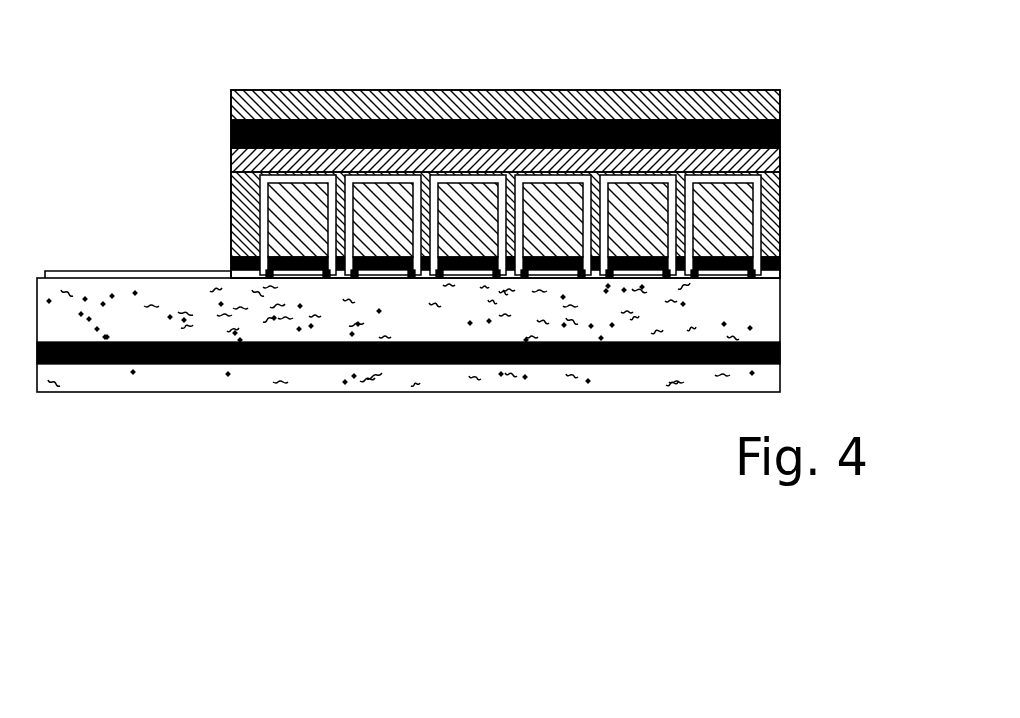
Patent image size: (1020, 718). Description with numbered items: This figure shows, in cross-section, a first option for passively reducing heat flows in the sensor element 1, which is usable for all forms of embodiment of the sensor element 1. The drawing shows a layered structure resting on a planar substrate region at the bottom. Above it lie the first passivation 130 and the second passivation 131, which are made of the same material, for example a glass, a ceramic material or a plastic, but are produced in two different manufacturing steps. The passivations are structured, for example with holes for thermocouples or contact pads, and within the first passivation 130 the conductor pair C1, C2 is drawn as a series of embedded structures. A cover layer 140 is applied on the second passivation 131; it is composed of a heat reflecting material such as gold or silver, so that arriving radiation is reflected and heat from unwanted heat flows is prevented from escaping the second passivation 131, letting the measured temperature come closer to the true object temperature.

The sensor element 1 is at (110, 207).
The first passivation 130 is at (562, 141).
The second passivation 131 is at (780, 153).
The cover layer 140 is at (780, 107).
The conductor pair C1 is at (275, 183).
The conductor pair C2 is at (312, 183).